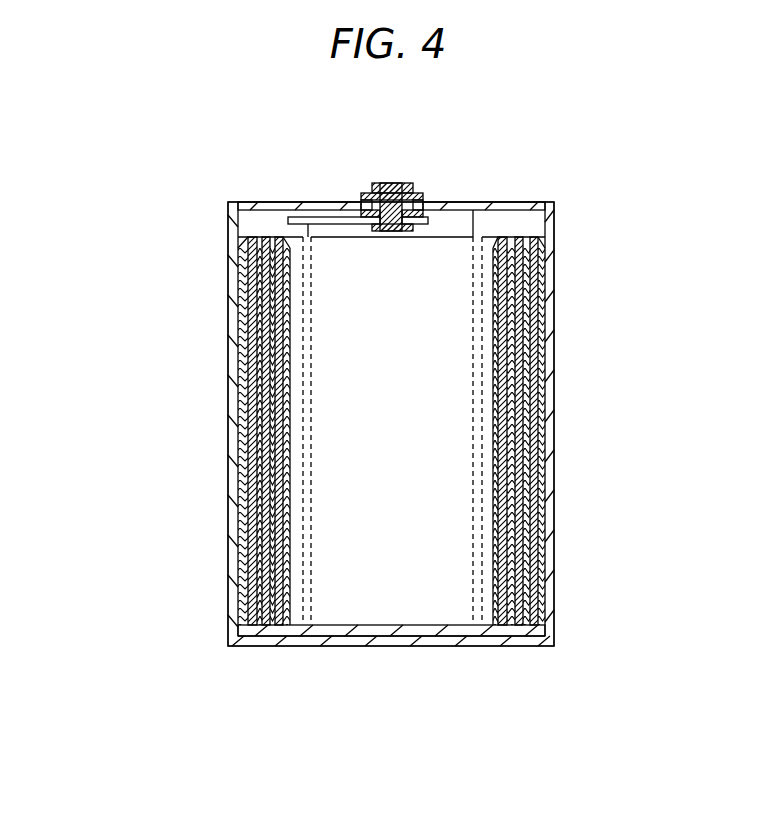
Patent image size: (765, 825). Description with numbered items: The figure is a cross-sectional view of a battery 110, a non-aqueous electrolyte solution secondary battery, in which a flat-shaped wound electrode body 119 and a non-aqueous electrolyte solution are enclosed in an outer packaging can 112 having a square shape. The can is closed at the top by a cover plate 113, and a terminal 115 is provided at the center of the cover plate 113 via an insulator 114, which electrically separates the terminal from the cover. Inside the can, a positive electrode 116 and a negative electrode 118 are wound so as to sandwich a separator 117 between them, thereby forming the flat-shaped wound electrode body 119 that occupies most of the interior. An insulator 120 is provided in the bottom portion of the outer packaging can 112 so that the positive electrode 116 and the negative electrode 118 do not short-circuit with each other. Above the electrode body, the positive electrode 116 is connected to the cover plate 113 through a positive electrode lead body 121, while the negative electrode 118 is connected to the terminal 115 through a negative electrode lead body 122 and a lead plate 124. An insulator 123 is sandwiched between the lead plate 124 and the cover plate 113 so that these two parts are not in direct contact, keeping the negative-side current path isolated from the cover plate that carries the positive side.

The battery 110 is at (483, 153).
The outer packaging can 112 is at (554, 367).
The cover plate 113 is at (507, 202).
The insulator 114 is at (423, 197).
The terminal 115 is at (384, 188).
The positive electrode 116 is at (242, 380).
The separator 117 is at (242, 417).
The negative electrode 118 is at (250, 473).
The flat-shaped wound electrode body 119 is at (327, 336).
The insulator 120 is at (378, 630).
The positive electrode lead body 121 is at (485, 223).
The negative electrode lead body 122 is at (308, 229).
The insulator 123 is at (360, 206).
The lead plate 124 is at (318, 217).